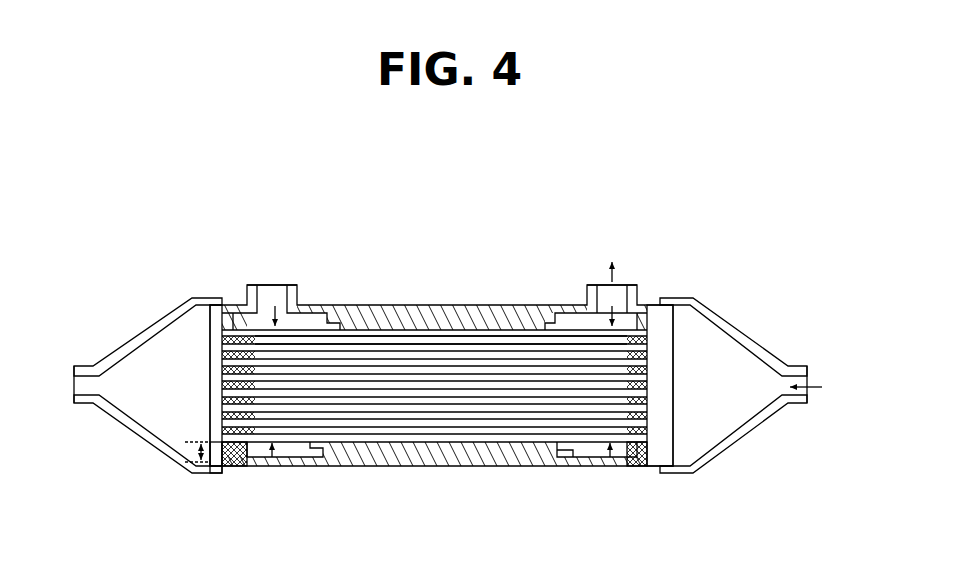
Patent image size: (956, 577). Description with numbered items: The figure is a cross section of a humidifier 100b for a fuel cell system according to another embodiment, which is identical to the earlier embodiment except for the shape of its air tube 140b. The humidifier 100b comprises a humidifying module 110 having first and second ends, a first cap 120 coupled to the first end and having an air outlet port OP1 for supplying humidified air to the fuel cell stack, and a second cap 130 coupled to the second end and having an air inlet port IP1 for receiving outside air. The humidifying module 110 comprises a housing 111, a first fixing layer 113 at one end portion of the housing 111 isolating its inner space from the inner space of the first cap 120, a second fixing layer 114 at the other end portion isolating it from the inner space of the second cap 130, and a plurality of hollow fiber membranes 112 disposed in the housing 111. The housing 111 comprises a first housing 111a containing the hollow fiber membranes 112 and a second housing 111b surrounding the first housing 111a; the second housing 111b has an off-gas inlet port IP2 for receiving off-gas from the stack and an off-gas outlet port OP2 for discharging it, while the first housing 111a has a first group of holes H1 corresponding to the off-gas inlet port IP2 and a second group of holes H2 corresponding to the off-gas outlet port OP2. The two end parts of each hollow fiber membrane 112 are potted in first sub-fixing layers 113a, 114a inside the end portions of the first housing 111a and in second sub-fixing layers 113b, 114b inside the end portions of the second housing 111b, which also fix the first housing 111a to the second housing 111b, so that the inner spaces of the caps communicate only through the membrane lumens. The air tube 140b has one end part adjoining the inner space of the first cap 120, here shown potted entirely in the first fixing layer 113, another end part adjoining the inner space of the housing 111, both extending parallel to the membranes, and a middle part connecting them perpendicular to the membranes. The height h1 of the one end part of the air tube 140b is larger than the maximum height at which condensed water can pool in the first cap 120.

The humidifier 100b is at (110, 189).
The humidifying module 110 is at (441, 325).
The housing 111 is at (448, 251).
The first housing 111a is at (378, 336).
The second housing 111b is at (440, 344).
The hollow fiber membrane 112 is at (486, 345).
The first fixing layer 113 is at (223, 502).
The first sub-fixing layer 113a is at (243, 466).
The second sub-fixing layer 113b is at (197, 484).
The second fixing layer 114 is at (658, 433).
The first sub-fixing layer 114a is at (640, 460).
The second sub-fixing layer 114b is at (672, 470).
The first cap 120 is at (144, 333).
The second cap 130 is at (740, 330).
The air tube 140b is at (196, 298).
The first group of holes H1 is at (275, 304).
The second group of holes H2 is at (612, 304).
The air inlet port IP1 is at (797, 364).
The off-gas inlet port IP2 is at (298, 302).
The air outlet port OP1 is at (80, 366).
The off-gas outlet port OP2 is at (641, 299).
The height of the one end part of the air tube h1 is at (196, 452).